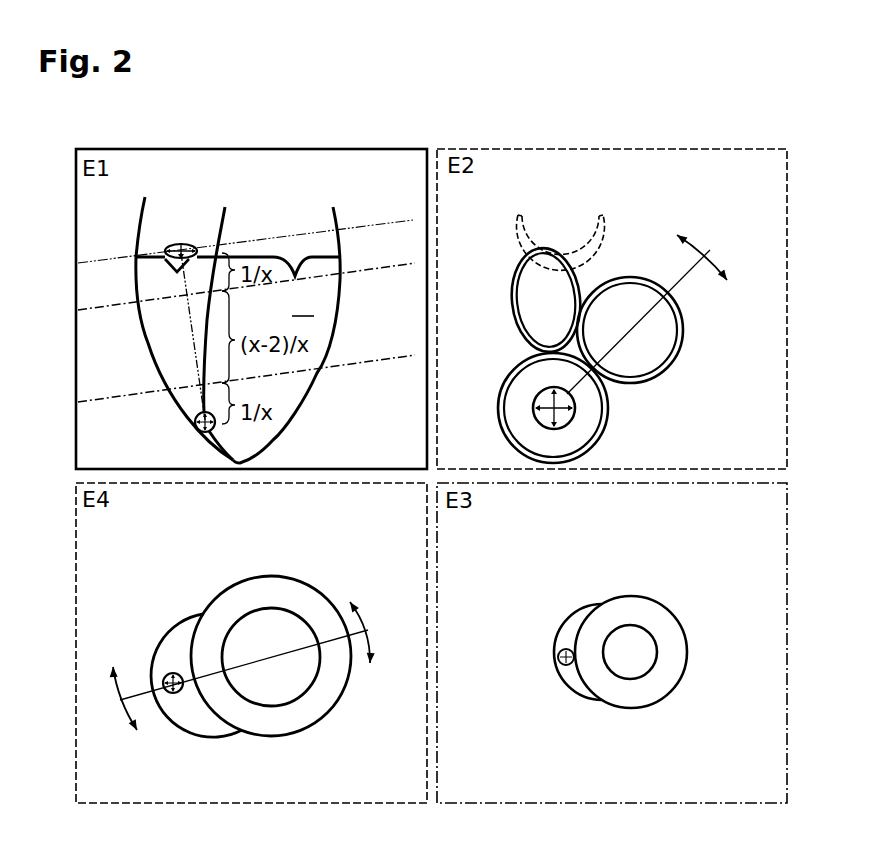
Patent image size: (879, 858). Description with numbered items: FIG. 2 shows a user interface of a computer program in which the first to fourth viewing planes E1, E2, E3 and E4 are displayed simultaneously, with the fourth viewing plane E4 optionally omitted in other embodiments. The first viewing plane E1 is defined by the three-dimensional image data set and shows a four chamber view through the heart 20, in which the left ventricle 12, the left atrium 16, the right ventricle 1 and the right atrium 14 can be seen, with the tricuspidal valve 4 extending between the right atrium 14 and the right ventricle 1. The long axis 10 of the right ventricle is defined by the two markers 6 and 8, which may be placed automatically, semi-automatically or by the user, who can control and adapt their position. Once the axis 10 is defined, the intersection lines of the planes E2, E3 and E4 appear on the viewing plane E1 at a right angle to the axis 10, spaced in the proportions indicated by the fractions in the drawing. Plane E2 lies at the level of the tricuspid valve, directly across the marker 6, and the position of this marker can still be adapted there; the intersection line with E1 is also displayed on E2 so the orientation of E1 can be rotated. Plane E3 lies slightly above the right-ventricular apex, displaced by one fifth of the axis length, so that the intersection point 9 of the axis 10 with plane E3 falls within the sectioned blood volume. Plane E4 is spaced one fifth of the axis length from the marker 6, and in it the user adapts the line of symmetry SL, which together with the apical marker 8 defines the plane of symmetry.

The right ventricle 1 is at (172, 332).
The tricuspidal valve 4 is at (170, 262).
The marker 6 is at (167, 247).
The marker 8 is at (195, 417).
The intersection point 9 is at (178, 694).
The long axis 10 is at (193, 350).
The left ventricle 12 is at (254, 627).
The right atrium 14 is at (178, 212).
The left atrium 16 is at (249, 212).
The heart 20 is at (344, 204).
The line of symmetry SL is at (300, 653).
The first viewing plane E1 is at (683, 282).
The second viewing plane E2 is at (383, 225).
The third viewing plane E3 is at (373, 365).
The fourth viewing plane E4 is at (373, 273).